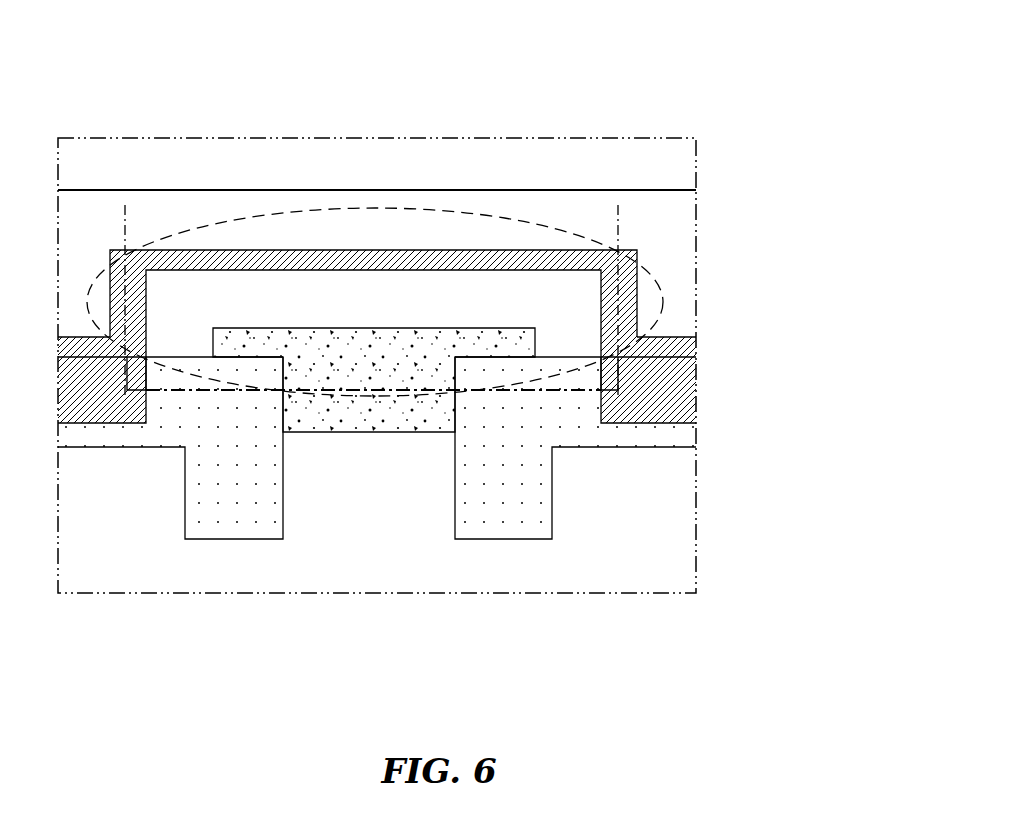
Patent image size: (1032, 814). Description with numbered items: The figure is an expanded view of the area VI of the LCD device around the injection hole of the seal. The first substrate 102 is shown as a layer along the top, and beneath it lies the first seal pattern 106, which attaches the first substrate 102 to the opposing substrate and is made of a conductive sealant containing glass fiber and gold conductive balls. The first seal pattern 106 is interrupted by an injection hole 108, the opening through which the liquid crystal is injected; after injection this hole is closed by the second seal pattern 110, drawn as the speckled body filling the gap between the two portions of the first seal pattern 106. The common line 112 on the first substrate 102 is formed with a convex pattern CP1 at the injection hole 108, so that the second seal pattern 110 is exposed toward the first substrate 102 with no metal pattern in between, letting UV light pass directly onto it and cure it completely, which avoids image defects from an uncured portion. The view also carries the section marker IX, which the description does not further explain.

The first substrate 102 is at (512, 190).
The first seal pattern 106 is at (552, 493).
The injection hole 108 is at (366, 535).
The second seal pattern 110 is at (363, 328).
The common line 112 is at (640, 299).
The convex pattern CP1 is at (646, 273).
The area VI is at (612, 128).
The section line IX is at (123, 218).